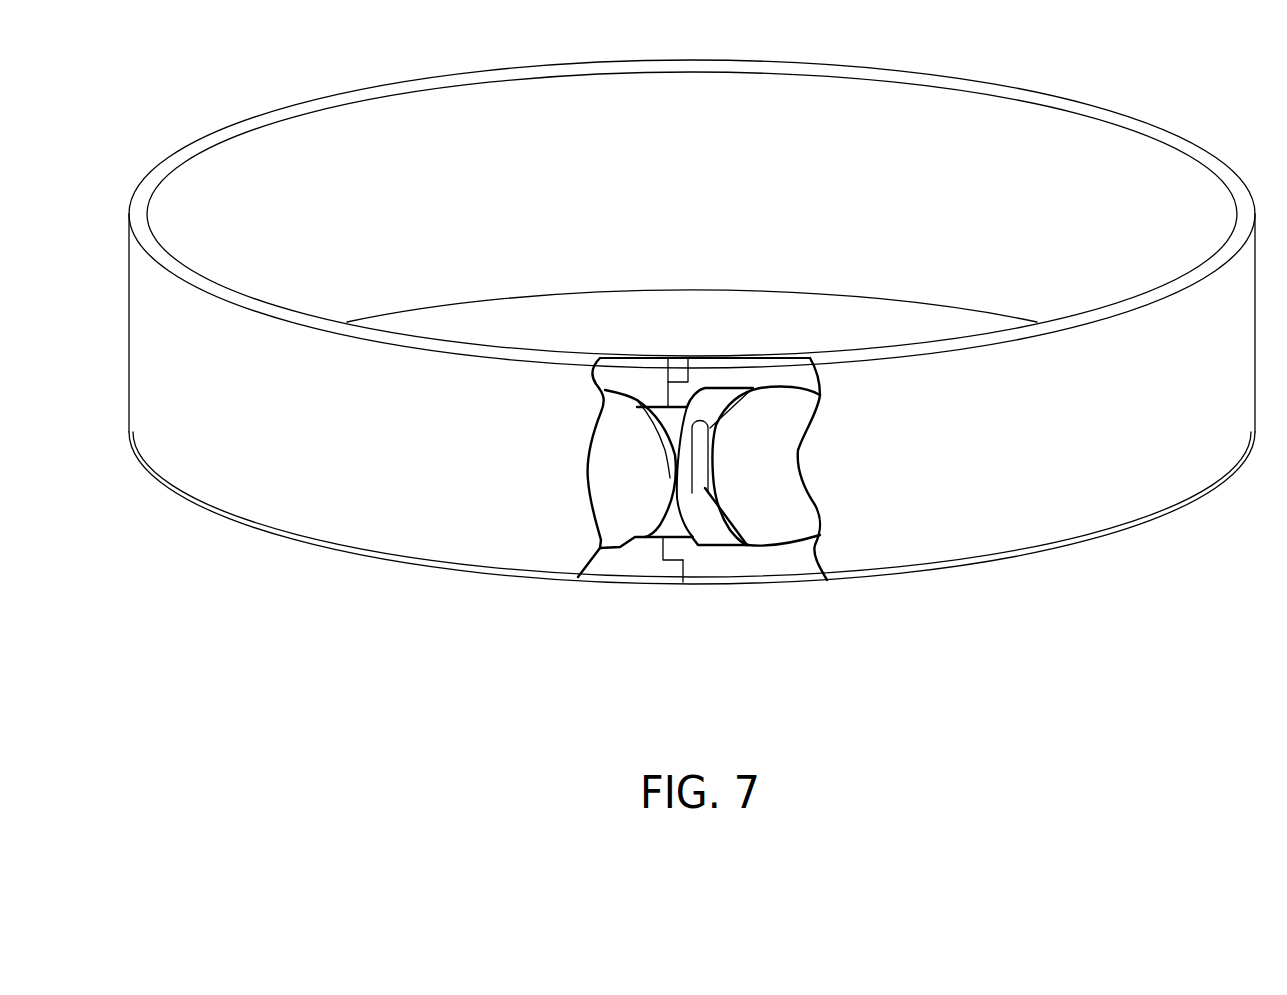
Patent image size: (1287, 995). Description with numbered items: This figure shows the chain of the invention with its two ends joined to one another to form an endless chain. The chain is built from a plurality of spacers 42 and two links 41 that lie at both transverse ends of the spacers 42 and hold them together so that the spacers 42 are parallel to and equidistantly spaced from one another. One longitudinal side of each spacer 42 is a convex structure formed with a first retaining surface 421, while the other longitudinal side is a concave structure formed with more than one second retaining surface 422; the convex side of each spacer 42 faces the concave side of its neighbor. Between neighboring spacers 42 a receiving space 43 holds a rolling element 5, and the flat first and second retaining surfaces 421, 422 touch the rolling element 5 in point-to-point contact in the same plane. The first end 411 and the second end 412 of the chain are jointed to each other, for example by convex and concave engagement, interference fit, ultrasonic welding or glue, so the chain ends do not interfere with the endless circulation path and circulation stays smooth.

The rolling element 5 is at (627, 522).
The link 41 is at (773, 580).
The first end 411 is at (677, 393).
The second end 412 is at (684, 374).
The spacer 42 is at (717, 400).
The first retaining surface 421 is at (635, 398).
The second retaining surface 422 is at (698, 490).
The receiving space 43 is at (790, 388).